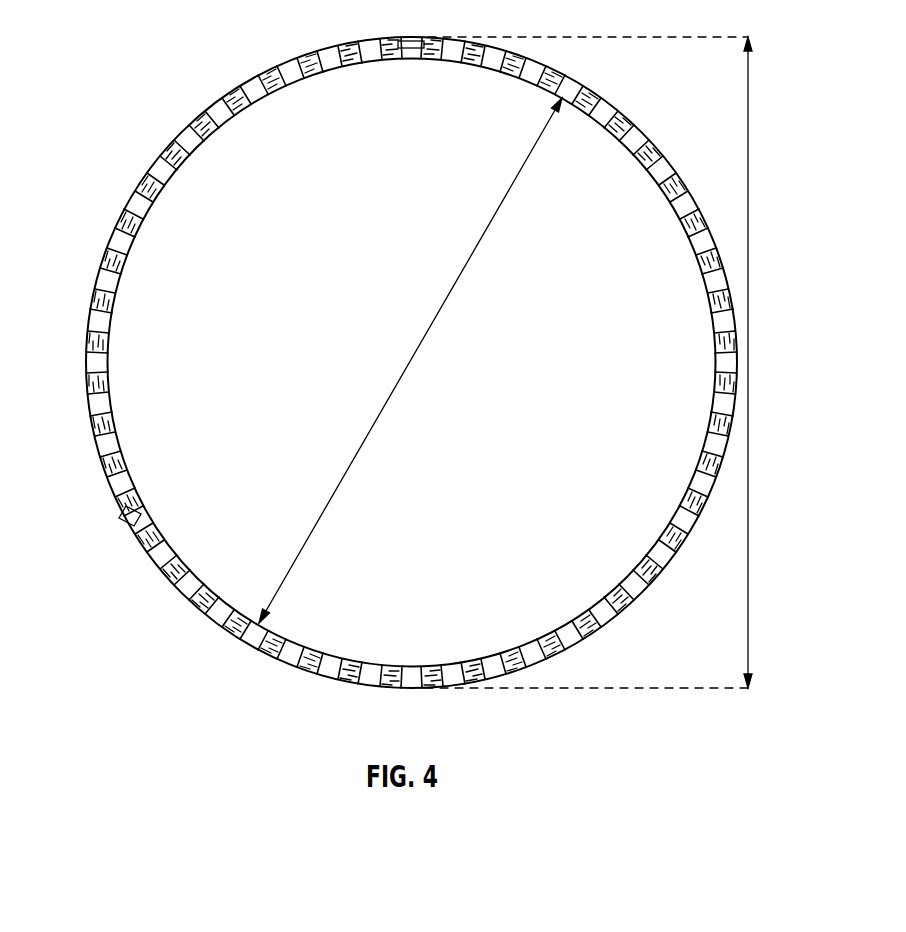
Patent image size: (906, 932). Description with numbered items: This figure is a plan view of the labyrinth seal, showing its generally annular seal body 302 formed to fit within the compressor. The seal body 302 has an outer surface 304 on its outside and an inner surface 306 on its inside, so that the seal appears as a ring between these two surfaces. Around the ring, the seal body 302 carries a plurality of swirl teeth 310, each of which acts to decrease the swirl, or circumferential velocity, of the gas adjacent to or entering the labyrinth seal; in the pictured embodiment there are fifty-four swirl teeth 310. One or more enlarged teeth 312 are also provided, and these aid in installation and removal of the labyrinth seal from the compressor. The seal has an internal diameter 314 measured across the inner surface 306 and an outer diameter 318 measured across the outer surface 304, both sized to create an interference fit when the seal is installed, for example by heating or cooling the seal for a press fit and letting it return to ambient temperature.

The seal body 302 is at (88, 315).
The outer surface 304 is at (125, 198).
The inner surface 306 is at (150, 213).
The swirl teeth 310 is at (162, 163).
The enlarged teeth 312 is at (122, 508).
The internal diameter 314 is at (410, 362).
The outer diameter 318 is at (748, 388).